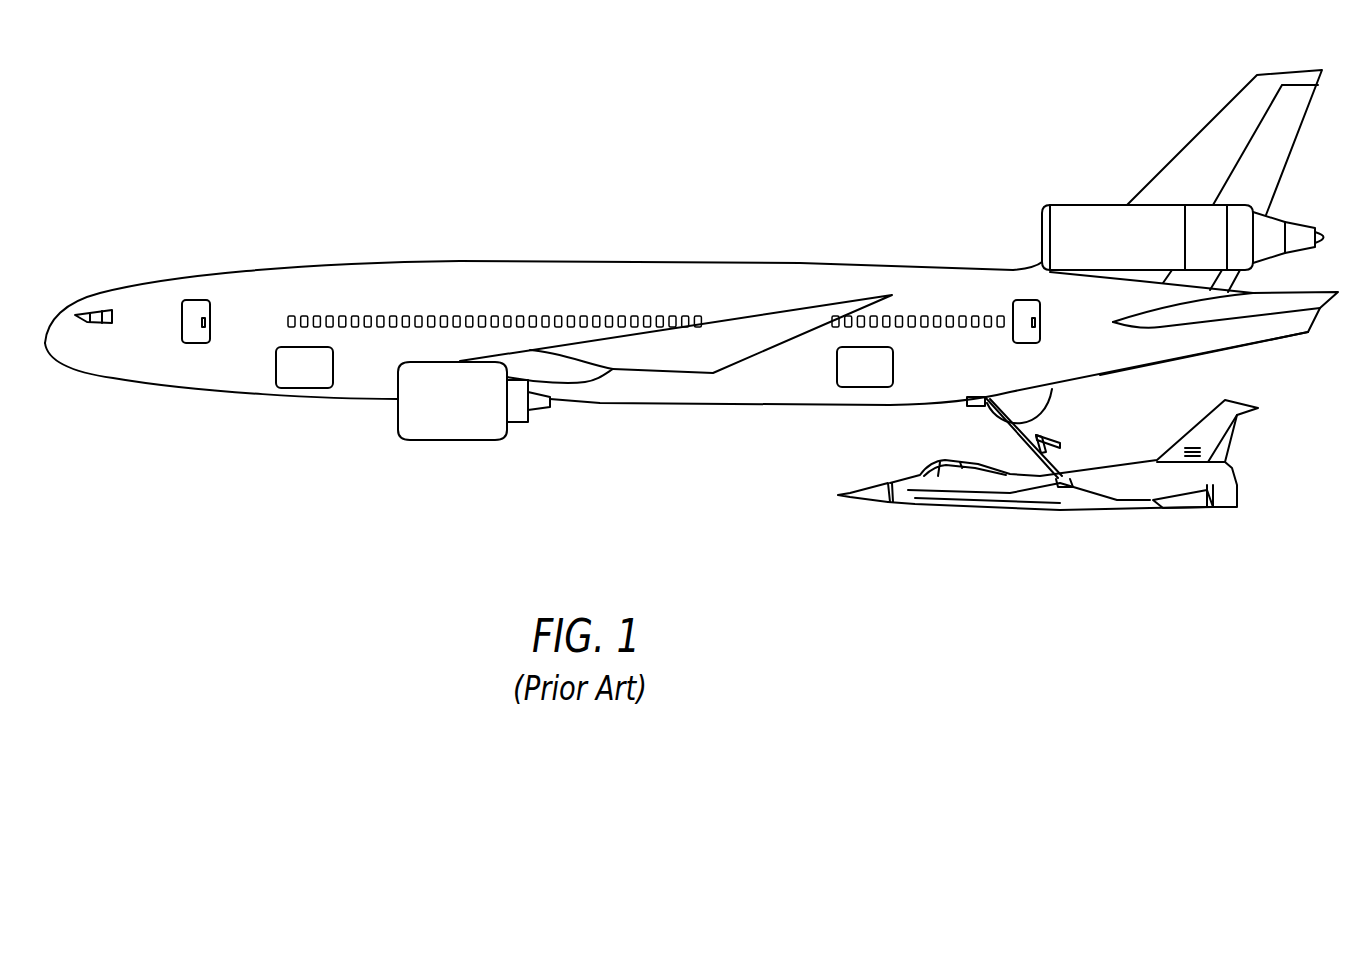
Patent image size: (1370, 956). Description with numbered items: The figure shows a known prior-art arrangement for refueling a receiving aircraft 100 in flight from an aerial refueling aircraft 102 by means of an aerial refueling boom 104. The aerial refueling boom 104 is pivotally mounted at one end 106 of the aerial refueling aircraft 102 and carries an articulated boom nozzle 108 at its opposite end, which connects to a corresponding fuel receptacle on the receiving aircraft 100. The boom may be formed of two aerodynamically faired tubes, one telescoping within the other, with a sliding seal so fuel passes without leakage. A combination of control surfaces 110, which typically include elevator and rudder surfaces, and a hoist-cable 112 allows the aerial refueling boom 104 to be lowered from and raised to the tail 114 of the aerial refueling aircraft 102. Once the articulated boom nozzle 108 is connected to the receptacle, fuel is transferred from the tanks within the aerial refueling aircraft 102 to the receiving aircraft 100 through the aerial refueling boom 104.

The receiving aircraft 100 is at (1155, 510).
The aerial refueling aircraft 102 is at (523, 262).
The aerial refueling boom 104 is at (1060, 460).
The end of the aerial refueling aircraft 106 is at (985, 406).
The articulated boom nozzle 108 is at (1060, 475).
The control surfaces 110 is at (1037, 452).
The hoist-cable 112 is at (1052, 407).
The tail 114 is at (1227, 348).